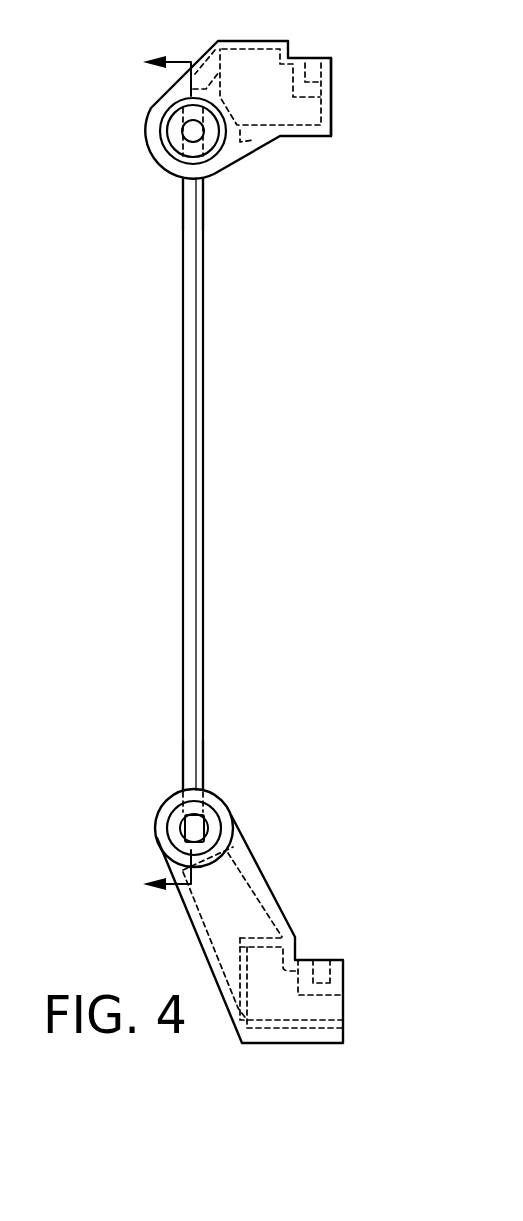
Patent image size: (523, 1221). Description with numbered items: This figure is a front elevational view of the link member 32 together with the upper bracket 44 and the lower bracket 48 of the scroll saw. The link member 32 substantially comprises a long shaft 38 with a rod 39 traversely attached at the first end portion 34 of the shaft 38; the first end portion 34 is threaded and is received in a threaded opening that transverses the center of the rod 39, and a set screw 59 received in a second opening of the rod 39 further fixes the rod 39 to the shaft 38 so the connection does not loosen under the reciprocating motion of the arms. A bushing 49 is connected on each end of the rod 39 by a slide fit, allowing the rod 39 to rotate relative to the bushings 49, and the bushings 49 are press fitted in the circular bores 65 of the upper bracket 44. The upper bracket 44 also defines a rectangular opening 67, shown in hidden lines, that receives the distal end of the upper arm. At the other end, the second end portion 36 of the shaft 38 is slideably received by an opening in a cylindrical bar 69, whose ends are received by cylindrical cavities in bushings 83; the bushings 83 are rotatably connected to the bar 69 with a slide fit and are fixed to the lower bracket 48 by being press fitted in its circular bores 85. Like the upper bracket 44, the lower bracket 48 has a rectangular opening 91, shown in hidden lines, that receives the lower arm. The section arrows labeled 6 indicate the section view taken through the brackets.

The section line 6- 6 is at (153, 475).
The link member 32 is at (203, 552).
The first end portion 34 is at (182, 203).
The second end portion 36 is at (205, 780).
The shaft 38 is at (203, 429).
The rod 39 is at (175, 127).
The upper bracket 44 is at (305, 57).
The lower bracket 48 is at (180, 900).
The bushing 49 is at (163, 158).
The set screw 59 is at (190, 129).
The circular bore 65 is at (218, 175).
The rectangular opening 67 is at (322, 137).
The cylindrical bar 69 is at (203, 828).
The bushing 83 is at (200, 810).
The circular bore 85 is at (155, 815).
The rectangular opening 91 is at (343, 1020).